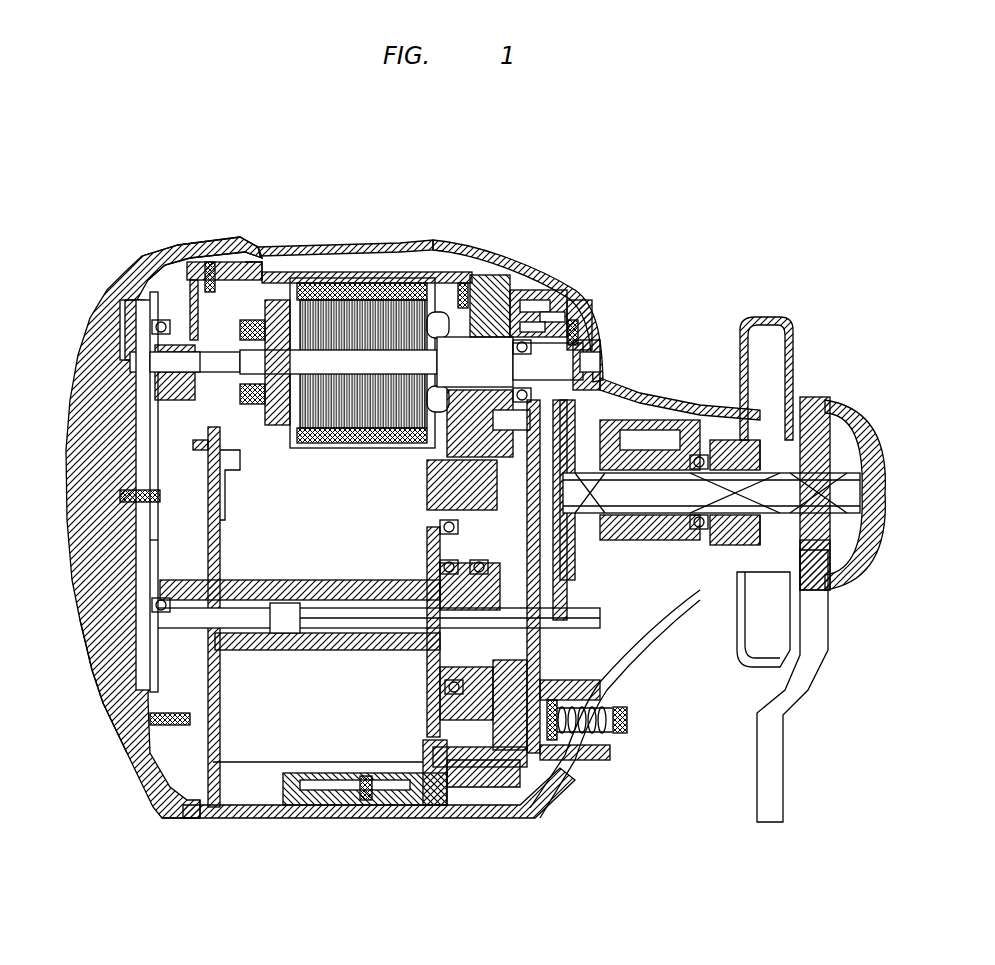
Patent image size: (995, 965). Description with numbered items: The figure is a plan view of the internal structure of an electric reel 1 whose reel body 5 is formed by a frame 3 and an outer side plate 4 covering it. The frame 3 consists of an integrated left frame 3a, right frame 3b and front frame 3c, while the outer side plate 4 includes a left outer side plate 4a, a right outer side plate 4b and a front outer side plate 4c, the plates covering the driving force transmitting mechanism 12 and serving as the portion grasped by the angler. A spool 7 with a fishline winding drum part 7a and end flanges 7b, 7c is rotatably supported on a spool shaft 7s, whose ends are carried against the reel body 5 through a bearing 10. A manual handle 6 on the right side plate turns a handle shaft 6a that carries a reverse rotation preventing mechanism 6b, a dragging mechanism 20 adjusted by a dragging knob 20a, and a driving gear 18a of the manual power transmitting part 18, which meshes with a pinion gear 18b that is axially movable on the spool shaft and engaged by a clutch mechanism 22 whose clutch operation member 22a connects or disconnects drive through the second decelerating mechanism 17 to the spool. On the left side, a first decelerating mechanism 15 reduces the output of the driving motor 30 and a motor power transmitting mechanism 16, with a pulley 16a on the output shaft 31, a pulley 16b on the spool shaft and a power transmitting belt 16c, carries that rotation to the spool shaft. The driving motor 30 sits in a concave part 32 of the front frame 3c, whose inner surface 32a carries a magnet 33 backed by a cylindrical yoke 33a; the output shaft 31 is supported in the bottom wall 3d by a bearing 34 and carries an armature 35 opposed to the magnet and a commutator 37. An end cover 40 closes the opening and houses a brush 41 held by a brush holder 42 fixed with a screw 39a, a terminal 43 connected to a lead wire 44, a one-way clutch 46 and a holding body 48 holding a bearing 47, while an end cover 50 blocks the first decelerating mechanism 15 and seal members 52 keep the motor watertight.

The electric reel 1 is at (513, 198).
The frame 3 is at (235, 266).
The left frame 3a is at (190, 820).
The right frame 3b is at (495, 790).
The front frame 3c is at (258, 262).
The bottom wall 3d is at (235, 445).
The outer side plate 4 is at (113, 284).
The left outer side plate 4a is at (118, 672).
The right outer side plate 4b is at (545, 308).
The front outer side plate 4c is at (360, 243).
The reel body 5 is at (174, 241).
The manual handle 6 is at (817, 638).
The handle shaft 6a is at (825, 430).
The reverse rotation preventing mechanism 6b is at (767, 490).
The spool 7 is at (318, 598).
The fishline winding drum part 7a is at (320, 650).
The flange 7b is at (226, 510).
The flange 7c is at (445, 558).
The spool shaft 7s is at (380, 628).
The bearing 10 is at (150, 718).
The driving force transmitting mechanism 12 is at (136, 458).
The first decelerating mechanism 15 is at (275, 300).
The motor power transmitting mechanism 16 is at (90, 539).
The pulley 16a is at (150, 375).
The pulley 16b is at (147, 585).
The power transmitting belt 16c is at (160, 545).
The second decelerating mechanism 17 is at (492, 735).
The manual power transmitting part 18 is at (658, 556).
The driving gear 18a is at (632, 390).
The pinion gear 18b is at (660, 596).
The dragging mechanism 20 is at (700, 407).
The dragging knob 20a is at (767, 337).
The clutch mechanism 22 is at (576, 659).
The clutch operation member 22a is at (603, 712).
The driving motor 30 is at (356, 318).
The output shaft 31 is at (133, 262).
The concave part 32 is at (391, 325).
The inner surface 32a is at (404, 276).
The magnet 33 is at (362, 293).
The yoke 33a is at (385, 255).
The bearing 34 is at (290, 300).
The armature 35 is at (482, 280).
The commutator 37 is at (405, 387).
The screw 39a is at (825, 557).
The end cover 40 is at (485, 297).
The brush 41 is at (545, 327).
The brush holder 42 is at (555, 317).
The terminal 43 is at (535, 297).
The lead wire 44 is at (600, 340).
The one-way clutch 46 is at (430, 540).
The bearing 47 is at (588, 343).
The holding body 48 is at (587, 372).
The end cover 50 is at (172, 405).
The seal member 52 is at (210, 262).